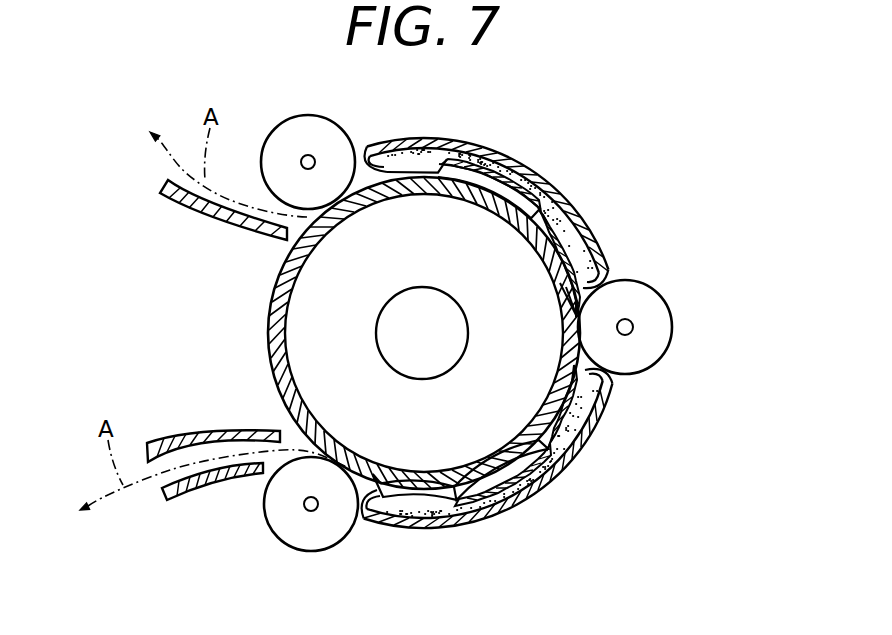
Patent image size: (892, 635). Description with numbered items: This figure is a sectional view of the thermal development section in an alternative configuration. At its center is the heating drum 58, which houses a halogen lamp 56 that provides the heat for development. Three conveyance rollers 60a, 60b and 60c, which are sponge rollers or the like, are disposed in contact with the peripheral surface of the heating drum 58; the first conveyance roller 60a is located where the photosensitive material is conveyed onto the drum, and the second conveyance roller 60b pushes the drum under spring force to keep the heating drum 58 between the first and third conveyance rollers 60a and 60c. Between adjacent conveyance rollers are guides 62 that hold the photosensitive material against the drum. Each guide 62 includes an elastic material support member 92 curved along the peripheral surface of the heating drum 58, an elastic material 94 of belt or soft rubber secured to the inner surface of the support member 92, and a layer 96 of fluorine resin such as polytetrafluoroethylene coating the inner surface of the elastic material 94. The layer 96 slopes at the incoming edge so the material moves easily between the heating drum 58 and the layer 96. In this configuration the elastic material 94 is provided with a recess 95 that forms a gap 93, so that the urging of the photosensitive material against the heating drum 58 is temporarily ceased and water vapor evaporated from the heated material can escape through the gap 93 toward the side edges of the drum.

The halogen lamp 56 is at (460, 342).
The heating drum 58 is at (275, 297).
The first conveyance roller 60a is at (342, 527).
The second conveyance roller 60b is at (650, 298).
The third conveyance roller 60c is at (331, 136).
The guide 62 is at (511, 338).
The elastic material support member 92 is at (573, 209).
The gap 93 is at (500, 190).
The elastic material 94 is at (420, 150).
The recess 95 is at (528, 490).
The layer 96 is at (562, 293).